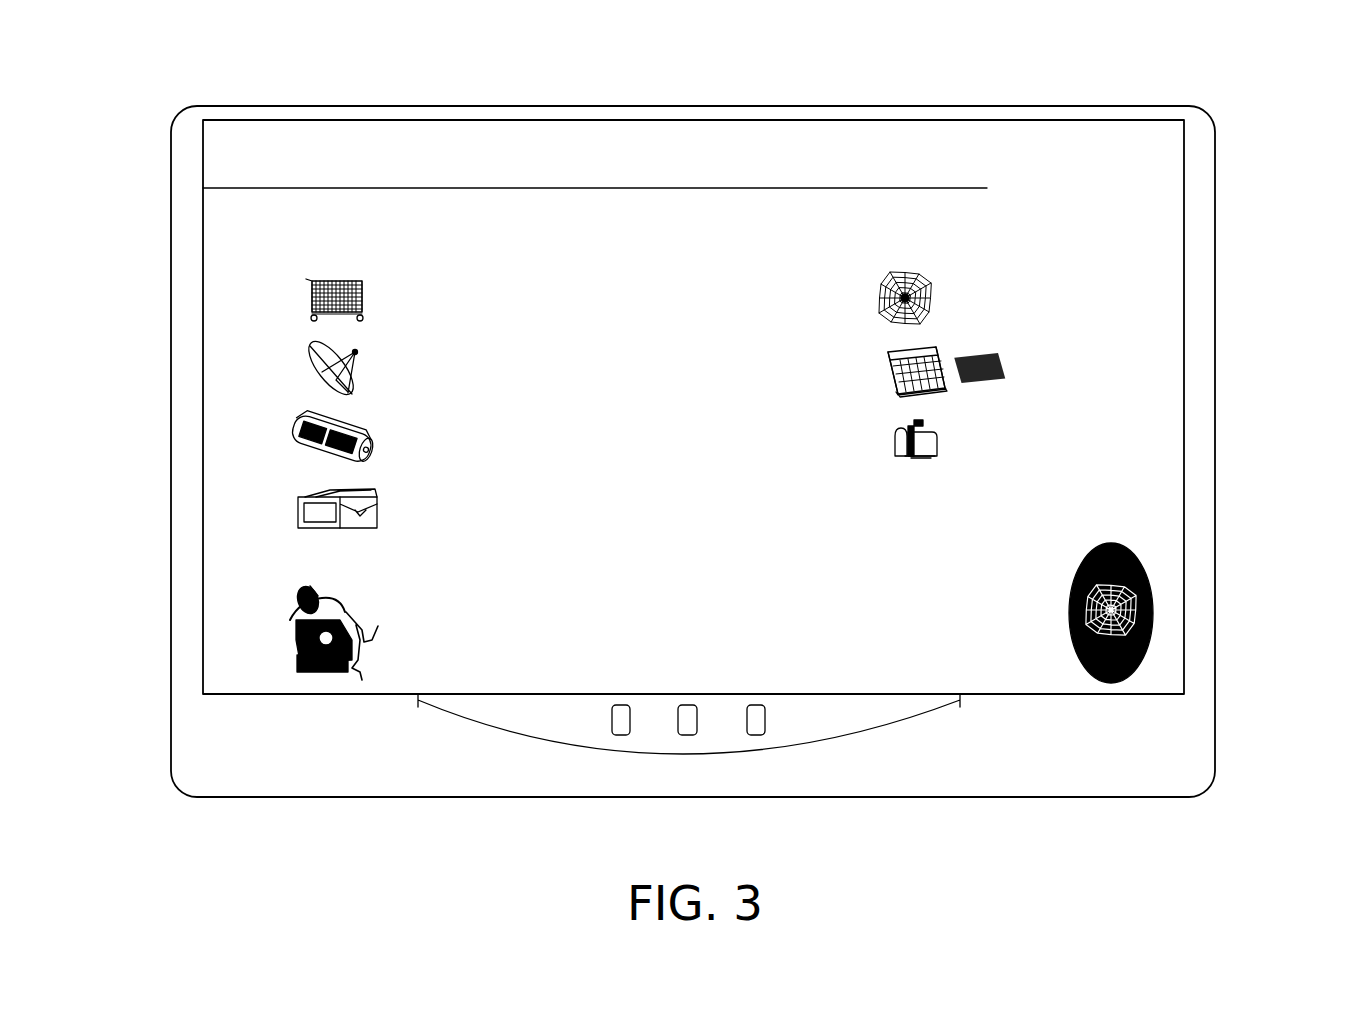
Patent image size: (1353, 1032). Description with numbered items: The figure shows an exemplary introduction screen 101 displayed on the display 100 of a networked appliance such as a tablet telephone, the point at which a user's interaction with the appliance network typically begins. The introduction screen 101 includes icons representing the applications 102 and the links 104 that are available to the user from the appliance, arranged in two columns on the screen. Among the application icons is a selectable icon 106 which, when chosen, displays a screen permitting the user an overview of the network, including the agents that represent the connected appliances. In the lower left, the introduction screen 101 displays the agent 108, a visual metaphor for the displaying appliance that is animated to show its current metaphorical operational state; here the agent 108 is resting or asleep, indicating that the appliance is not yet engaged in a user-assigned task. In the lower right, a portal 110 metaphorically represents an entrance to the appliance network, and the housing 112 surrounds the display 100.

The display 100 is at (802, 92).
The introduction screen 101 is at (1132, 398).
The applications 102 is at (1078, 226).
The links 104 is at (255, 237).
The selectable icon 106 is at (940, 287).
The agent 108 is at (268, 606).
The portal 110 is at (1128, 537).
The device housing 112 is at (1220, 445).